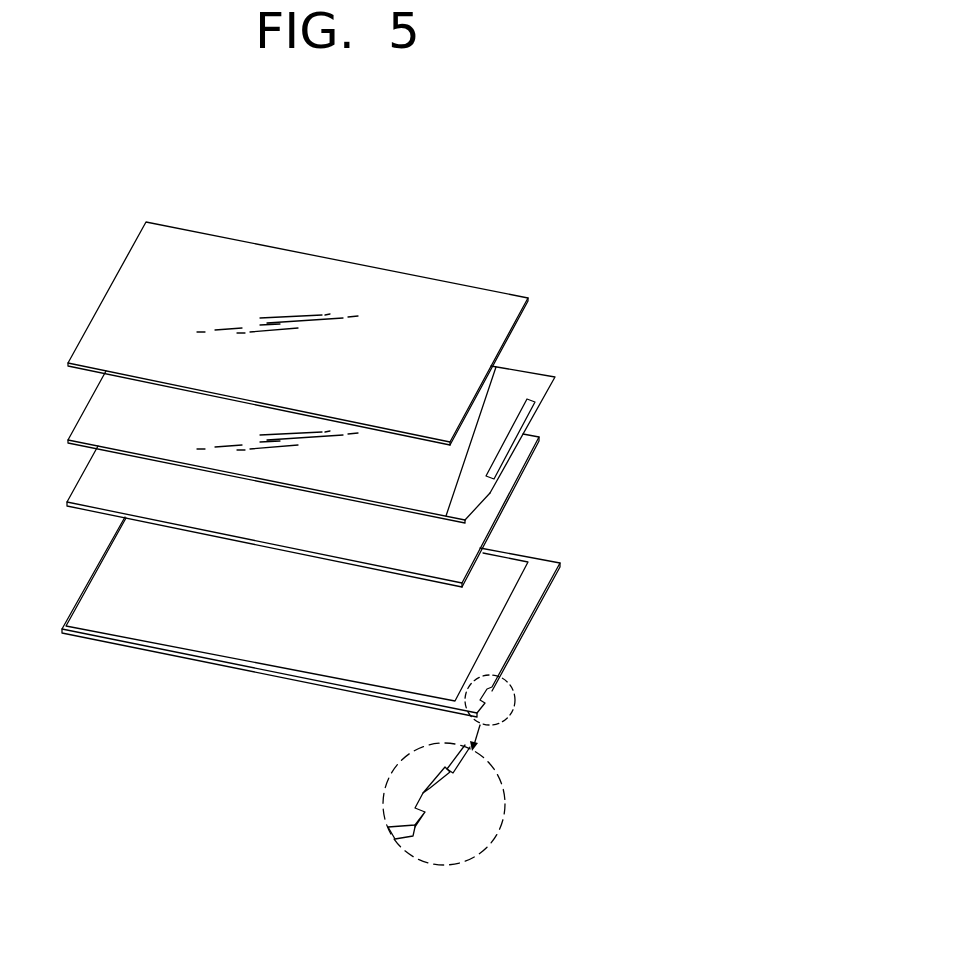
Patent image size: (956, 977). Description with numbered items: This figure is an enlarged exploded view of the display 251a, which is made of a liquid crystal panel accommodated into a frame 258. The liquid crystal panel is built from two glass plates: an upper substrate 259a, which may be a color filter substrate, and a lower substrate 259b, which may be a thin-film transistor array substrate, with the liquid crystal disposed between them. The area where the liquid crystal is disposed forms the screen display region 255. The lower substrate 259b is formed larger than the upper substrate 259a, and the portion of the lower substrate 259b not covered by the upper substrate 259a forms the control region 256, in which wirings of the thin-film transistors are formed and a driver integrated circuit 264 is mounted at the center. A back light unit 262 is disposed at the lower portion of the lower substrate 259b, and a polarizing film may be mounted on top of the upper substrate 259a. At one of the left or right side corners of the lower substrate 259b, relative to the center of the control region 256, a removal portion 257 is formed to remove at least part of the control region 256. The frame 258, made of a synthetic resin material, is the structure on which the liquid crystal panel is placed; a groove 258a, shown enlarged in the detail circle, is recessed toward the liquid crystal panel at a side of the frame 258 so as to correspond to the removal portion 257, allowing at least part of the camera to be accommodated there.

The display 251a is at (325, 228).
The upper substrate 259a is at (503, 313).
The lower substrate 259b is at (629, 340).
The screen display region 255 is at (503, 376).
The control region 256 is at (537, 388).
The driver integrated circuit 264 is at (520, 422).
The back light unit 262 is at (510, 478).
The removal portion 257 is at (470, 513).
The frame 258 is at (512, 618).
The groove 258a is at (437, 788).